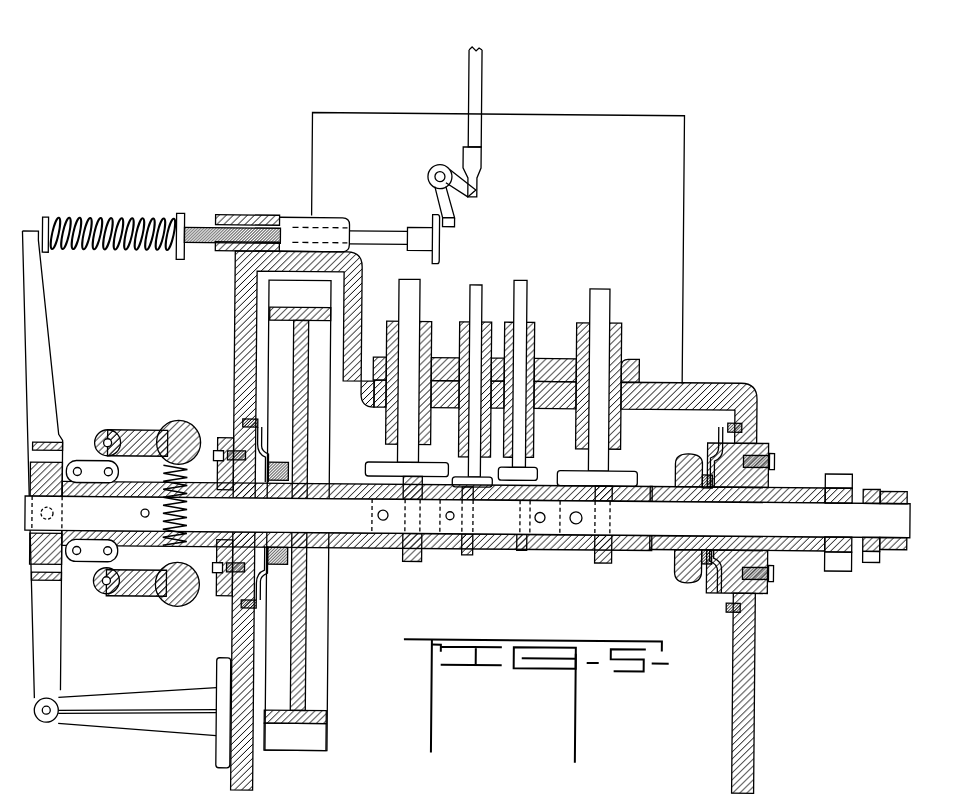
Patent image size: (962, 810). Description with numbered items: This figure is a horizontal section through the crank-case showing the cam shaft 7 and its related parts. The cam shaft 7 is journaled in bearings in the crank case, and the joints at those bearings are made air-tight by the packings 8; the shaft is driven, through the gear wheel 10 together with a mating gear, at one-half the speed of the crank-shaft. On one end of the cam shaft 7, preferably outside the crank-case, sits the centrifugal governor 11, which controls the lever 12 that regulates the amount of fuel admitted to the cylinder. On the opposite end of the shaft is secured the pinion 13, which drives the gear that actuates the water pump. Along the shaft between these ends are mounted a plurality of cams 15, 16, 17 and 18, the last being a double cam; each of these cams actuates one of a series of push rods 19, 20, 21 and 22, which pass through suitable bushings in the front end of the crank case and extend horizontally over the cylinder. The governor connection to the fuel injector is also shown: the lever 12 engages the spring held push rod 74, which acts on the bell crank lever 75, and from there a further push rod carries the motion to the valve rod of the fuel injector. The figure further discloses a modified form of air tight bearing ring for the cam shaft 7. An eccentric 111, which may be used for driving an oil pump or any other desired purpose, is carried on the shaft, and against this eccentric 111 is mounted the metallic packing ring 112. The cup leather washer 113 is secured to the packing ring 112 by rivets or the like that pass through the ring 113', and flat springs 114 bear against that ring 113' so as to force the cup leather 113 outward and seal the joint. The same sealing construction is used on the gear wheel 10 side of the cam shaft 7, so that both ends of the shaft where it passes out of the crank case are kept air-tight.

The cam shaft 7 is at (900, 518).
The packings 8 is at (772, 458).
The gear 10 is at (288, 742).
The centrifugal governor 11 is at (88, 464).
The lever 12 is at (40, 352).
The pinion 13 is at (837, 561).
The cam 15 is at (605, 563).
The cam 16 is at (519, 551).
The cam 17 is at (461, 556).
The double cam 18 is at (409, 562).
The push rod 19 is at (603, 304).
The push rod 20 is at (521, 293).
The push rod 21 is at (472, 286).
The push rod 22 is at (413, 291).
The spring held push rod 74 is at (130, 236).
The bell crank lever 75 is at (430, 192).
The eccentric 111 is at (686, 567).
The metallic packing ring 112 is at (302, 471).
The cup leather washer 113 is at (519, 539).
The ring 113' is at (536, 515).
The flat springs 114 is at (236, 440).